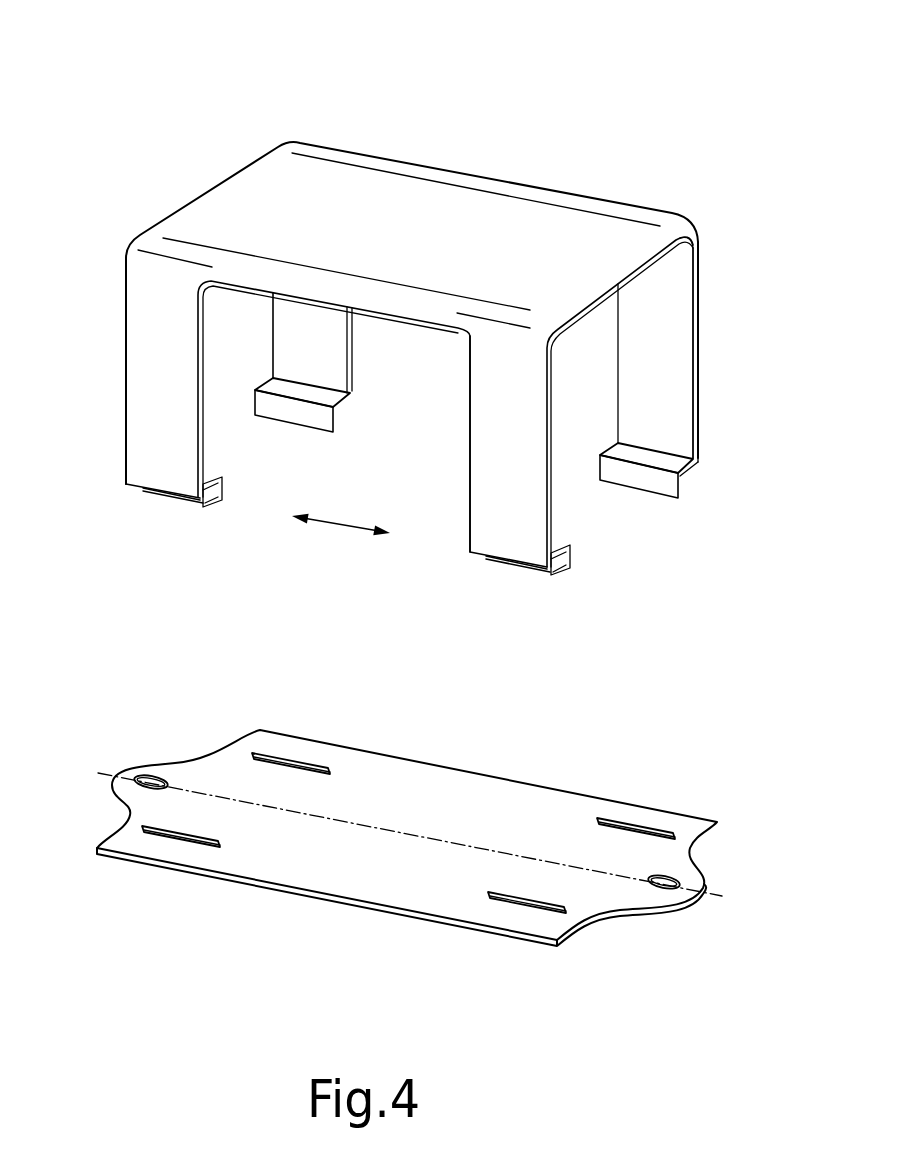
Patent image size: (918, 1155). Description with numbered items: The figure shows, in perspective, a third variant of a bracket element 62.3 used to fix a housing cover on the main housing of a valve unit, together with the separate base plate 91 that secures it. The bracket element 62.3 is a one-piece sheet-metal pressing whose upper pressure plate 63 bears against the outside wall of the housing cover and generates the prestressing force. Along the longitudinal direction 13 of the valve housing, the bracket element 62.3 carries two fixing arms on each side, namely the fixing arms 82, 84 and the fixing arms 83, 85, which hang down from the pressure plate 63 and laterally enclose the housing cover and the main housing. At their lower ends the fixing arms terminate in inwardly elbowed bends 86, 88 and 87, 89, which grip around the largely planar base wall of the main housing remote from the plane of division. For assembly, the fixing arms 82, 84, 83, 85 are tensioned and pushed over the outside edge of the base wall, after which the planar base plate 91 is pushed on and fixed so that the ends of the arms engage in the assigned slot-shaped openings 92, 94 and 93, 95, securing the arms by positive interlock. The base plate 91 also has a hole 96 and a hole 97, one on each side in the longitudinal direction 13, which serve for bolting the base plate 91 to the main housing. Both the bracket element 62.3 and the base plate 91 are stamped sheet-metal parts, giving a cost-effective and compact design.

The bracket element 62.3 is at (528, 140).
The pressure plate 63 is at (412, 227).
The fixing arm 82 is at (163, 390).
The fixing arm 83 is at (315, 347).
The fixing arm 84 is at (507, 490).
The fixing arm 85 is at (660, 347).
The inwardly elbowed bend 86 is at (210, 494).
The inwardly elbowed bend 87 is at (295, 410).
The inwardly elbowed bend 88 is at (568, 567).
The inwardly elbowed bend 89 is at (648, 482).
The longitudinal direction 13 is at (341, 535).
The base plate 91 is at (432, 803).
The opening 92 is at (177, 837).
The opening 93 is at (305, 760).
The opening 94 is at (515, 903).
The opening 95 is at (635, 825).
The hole 96 is at (152, 777).
The hole 97 is at (667, 878).